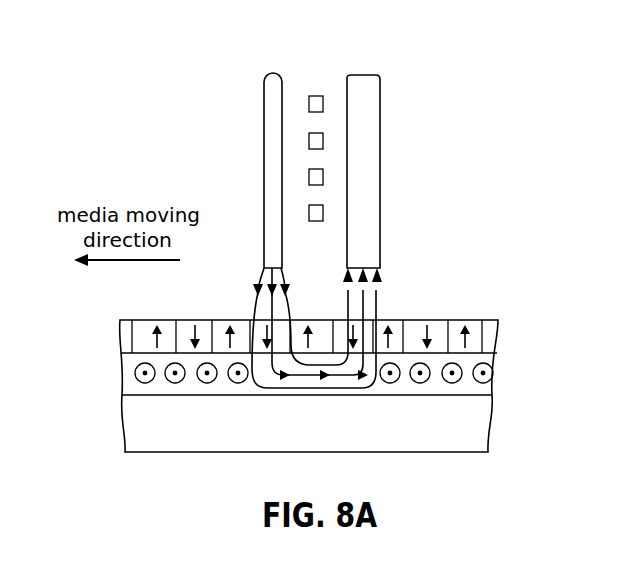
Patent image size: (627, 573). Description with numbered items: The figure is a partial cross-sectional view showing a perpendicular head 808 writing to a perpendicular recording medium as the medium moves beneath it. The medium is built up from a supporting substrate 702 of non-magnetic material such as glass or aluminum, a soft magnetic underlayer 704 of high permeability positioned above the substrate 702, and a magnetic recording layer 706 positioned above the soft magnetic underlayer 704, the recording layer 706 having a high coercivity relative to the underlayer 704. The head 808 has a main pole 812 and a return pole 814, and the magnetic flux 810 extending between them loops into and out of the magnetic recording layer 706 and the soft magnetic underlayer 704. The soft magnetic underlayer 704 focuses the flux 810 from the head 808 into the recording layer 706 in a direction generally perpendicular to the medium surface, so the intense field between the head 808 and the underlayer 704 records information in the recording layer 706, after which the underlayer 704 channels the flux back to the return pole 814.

The perpendicular head 808 is at (270, 52).
The main pole 812 is at (266, 160).
The return pole 814 is at (374, 164).
The magnetic flux 810 is at (380, 303).
The magnetic recording layer 706 is at (488, 332).
The soft magnetic underlayer 704 is at (493, 363).
The supporting substrate 702 is at (217, 424).